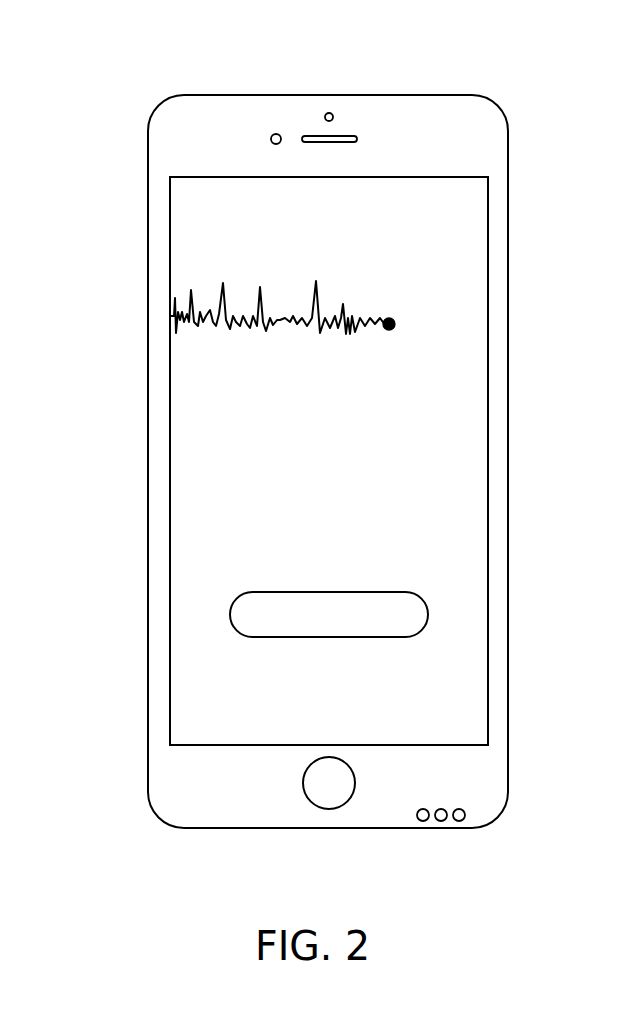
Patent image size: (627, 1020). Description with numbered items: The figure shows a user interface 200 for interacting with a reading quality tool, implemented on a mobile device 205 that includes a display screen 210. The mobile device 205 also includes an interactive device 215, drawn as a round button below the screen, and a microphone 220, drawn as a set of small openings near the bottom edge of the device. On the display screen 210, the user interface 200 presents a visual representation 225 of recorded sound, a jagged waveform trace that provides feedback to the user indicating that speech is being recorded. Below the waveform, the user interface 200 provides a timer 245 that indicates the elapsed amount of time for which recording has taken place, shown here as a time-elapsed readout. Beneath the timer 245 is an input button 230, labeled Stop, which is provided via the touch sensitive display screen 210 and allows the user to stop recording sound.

The user interface 200 is at (228, 68).
The mobile device 205 is at (506, 122).
The display screen 210 is at (482, 198).
The visual representation of recorded sound 225 is at (394, 320).
The timer 245 is at (391, 522).
The input button 230 is at (424, 599).
The interactive device 215 is at (330, 809).
The microphone 220 is at (465, 820).